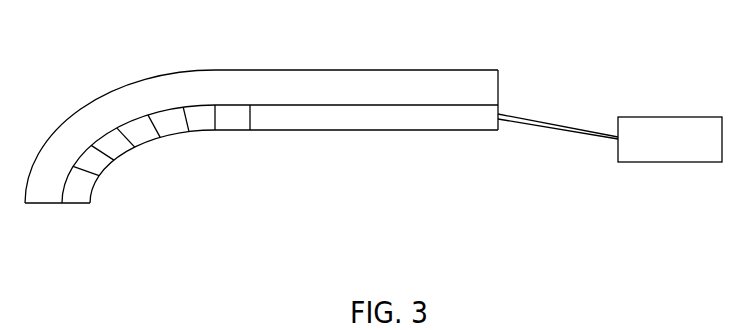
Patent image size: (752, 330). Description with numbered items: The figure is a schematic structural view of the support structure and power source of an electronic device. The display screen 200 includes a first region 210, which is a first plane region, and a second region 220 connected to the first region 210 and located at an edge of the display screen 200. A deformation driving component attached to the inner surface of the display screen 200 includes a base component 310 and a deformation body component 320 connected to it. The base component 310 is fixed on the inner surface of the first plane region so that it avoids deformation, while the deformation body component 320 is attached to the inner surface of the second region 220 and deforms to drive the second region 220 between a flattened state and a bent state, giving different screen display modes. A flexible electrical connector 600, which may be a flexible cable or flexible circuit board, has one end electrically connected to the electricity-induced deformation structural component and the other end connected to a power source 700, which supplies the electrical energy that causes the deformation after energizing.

The display screen 200 is at (260, 110).
The first region 210 is at (456, 80).
The second region 220 is at (95, 115).
The base component 310 is at (318, 120).
The deformation body component 320 is at (206, 125).
The flexible electrical connector 600 is at (555, 125).
The power source 700 is at (638, 135).